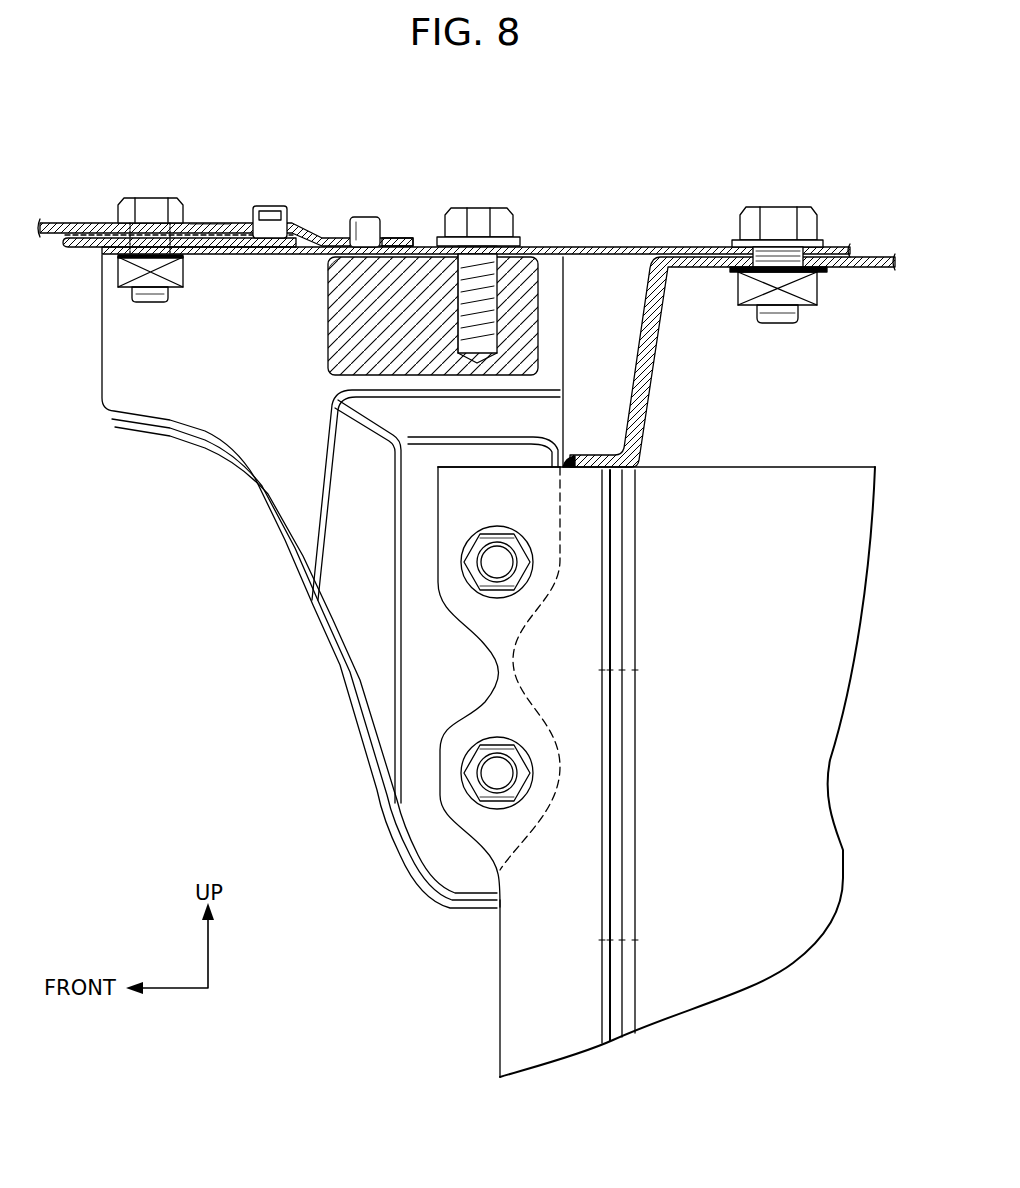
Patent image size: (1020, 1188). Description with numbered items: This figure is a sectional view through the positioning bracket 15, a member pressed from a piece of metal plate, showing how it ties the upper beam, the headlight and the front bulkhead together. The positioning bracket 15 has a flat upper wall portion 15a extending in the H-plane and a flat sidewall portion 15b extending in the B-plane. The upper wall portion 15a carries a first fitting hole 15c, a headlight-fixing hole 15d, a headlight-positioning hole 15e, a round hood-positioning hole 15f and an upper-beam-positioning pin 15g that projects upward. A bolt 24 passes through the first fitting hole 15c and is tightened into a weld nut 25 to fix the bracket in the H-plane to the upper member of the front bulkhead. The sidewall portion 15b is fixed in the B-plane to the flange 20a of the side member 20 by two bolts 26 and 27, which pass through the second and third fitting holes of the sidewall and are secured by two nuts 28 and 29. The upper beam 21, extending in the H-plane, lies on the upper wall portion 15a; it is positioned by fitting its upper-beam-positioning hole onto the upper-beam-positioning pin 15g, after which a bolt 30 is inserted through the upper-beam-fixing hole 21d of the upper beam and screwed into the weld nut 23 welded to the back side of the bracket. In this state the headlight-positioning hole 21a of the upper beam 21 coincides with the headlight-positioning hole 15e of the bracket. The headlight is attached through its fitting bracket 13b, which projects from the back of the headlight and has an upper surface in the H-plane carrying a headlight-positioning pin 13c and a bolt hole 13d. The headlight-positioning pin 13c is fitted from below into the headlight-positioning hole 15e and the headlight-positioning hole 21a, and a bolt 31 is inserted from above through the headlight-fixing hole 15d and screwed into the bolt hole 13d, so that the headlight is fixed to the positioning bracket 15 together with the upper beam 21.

The fitting bracket 13b is at (345, 340).
The headlight-positioning pin 13c is at (360, 222).
The bolt hole 13d is at (487, 313).
The positioning bracket 15 is at (272, 565).
The upper wall portion 15a is at (612, 246).
The sidewall portion 15b is at (423, 662).
The first fitting hole 15c is at (765, 250).
The headlight-fixing hole 15d is at (490, 226).
The headlight-positioning hole 15e is at (327, 290).
The hood-positioning hole 15f is at (243, 256).
The upper-beam-positioning pin 15g is at (262, 214).
The side member 20 is at (758, 455).
The flange 20a is at (527, 990).
The upper beam 21 is at (86, 212).
The headlight-positioning hole 21a is at (380, 226).
The upper-beam-fixing hole 21d is at (196, 224).
The weld nut 23 is at (172, 290).
The bolt 24 is at (790, 214).
The weld nut 25 is at (812, 290).
The bolt 26 is at (497, 560).
The bolt 27 is at (497, 771).
The nut 28 is at (520, 582).
The nut 29 is at (525, 792).
The bolt 30 is at (154, 208).
The bolt 31 is at (466, 214).